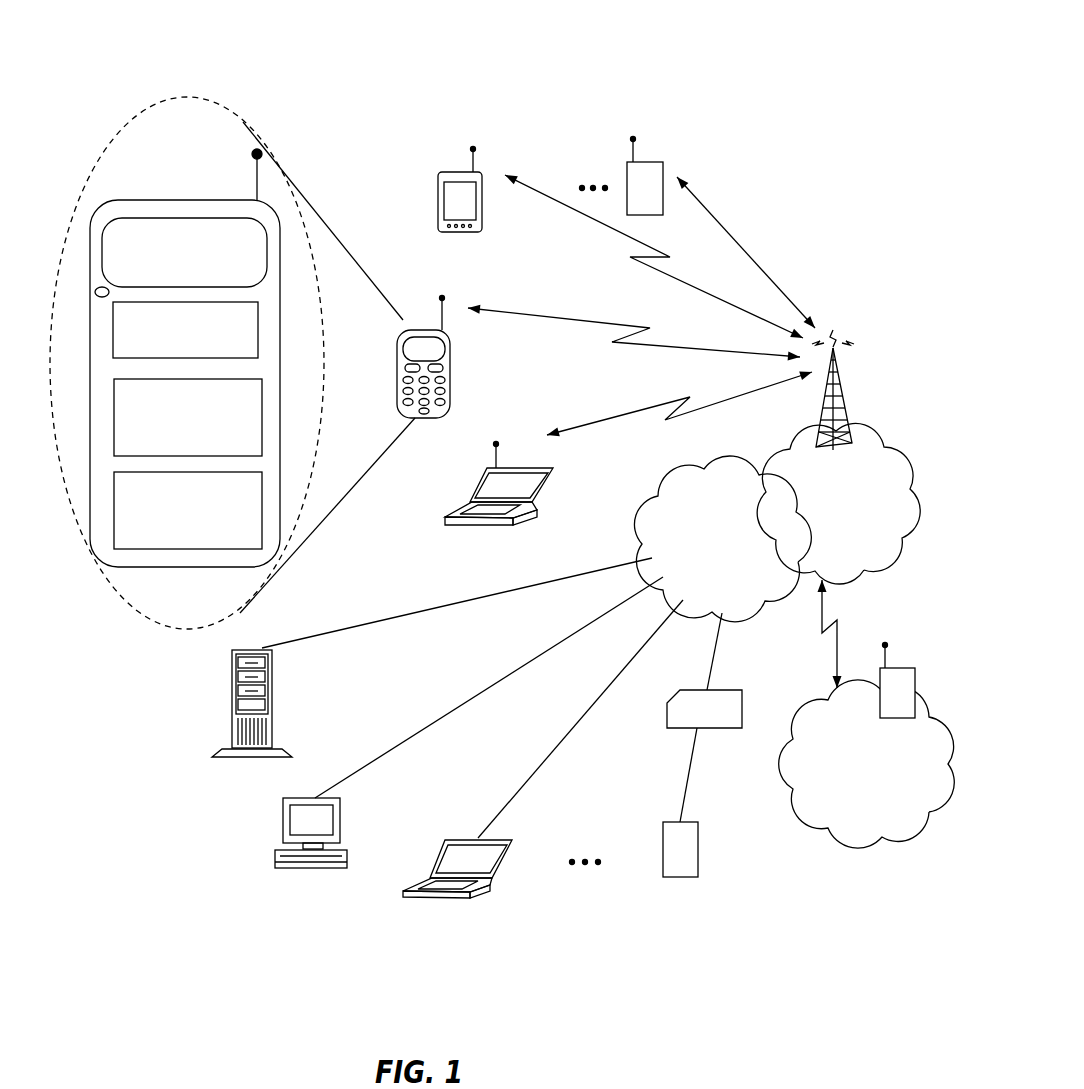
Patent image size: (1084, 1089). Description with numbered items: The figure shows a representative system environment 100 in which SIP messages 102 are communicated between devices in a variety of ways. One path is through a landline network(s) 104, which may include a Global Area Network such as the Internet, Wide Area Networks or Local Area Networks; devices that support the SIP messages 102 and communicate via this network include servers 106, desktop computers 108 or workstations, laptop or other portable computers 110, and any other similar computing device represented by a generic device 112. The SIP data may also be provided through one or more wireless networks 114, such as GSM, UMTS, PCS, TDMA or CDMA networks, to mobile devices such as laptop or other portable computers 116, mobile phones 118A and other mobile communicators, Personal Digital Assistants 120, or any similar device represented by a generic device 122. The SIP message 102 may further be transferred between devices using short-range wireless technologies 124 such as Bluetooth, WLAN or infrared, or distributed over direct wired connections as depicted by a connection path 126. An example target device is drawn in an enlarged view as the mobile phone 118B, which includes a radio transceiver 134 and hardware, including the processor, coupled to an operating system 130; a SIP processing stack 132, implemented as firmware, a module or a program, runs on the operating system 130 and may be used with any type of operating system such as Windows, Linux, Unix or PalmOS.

The system environment 100 is at (792, 100).
The SIP messages 102 is at (717, 688).
The landline network(s) 104 is at (698, 465).
The servers 106 is at (278, 698).
The desktop computers 108 is at (337, 798).
The laptop or other portable computers 110 is at (497, 838).
The generic device 112 is at (672, 822).
The wireless networks 114 is at (783, 462).
The laptop or other portable computers 116 is at (548, 487).
The mobile phones 118A is at (452, 375).
The mobile phone 118B is at (207, 195).
The Personal Digital Assistants 120 is at (455, 172).
The generic device 122 is at (644, 162).
The short-range wireless technologies 124 is at (893, 842).
The connection path 126 is at (692, 752).
The operating system 130 is at (262, 430).
The SIP processing stack 132 is at (232, 548).
The radio transceiver 134 is at (258, 330).